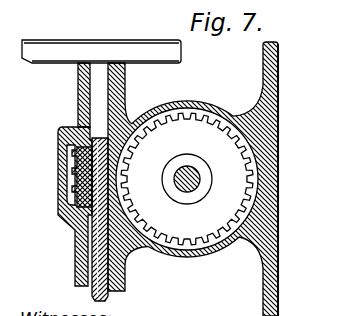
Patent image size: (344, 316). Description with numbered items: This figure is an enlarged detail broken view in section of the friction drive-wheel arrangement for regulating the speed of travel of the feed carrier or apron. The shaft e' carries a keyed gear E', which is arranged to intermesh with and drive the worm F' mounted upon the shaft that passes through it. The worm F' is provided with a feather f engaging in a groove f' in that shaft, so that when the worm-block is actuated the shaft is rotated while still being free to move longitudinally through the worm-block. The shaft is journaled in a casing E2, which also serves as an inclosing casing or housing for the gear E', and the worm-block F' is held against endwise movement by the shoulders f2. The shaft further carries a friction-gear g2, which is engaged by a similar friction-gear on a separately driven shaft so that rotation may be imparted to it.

The friction-gear g2 is at (28, 52).
The casing E2 is at (204, 110).
The worm F' is at (60, 121).
The shoulders f2 is at (58, 137).
The groove f' is at (61, 206).
The feather f is at (68, 219).
The gear E' is at (213, 179).
The shaft e' is at (190, 187).